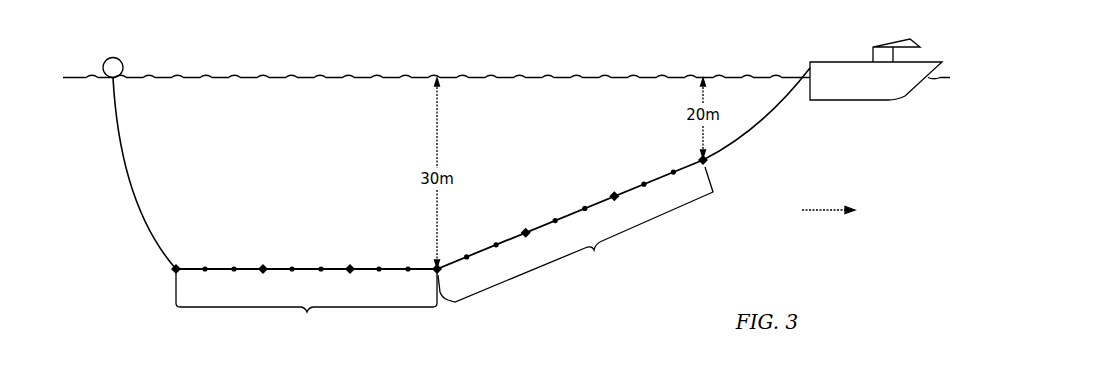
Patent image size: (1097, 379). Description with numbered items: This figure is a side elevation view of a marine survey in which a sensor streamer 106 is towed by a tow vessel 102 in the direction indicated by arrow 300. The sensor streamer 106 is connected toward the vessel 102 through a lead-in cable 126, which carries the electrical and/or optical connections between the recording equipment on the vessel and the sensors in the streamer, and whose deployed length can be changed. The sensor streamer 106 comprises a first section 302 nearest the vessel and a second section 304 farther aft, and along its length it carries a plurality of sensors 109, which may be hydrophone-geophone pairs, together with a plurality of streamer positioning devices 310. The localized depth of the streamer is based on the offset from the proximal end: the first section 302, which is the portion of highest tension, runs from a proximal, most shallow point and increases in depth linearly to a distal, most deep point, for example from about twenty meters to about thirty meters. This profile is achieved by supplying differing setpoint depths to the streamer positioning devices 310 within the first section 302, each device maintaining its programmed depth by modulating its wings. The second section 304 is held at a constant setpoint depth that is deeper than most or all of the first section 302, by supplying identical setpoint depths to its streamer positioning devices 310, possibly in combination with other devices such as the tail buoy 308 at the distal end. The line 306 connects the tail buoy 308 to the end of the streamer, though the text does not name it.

The tow vessel 102 is at (837, 60).
The sensor streamer 106 is at (572, 212).
The sensors 109 is at (407, 266).
The lead-in cable 126 is at (757, 121).
The arrow 300 is at (829, 212).
The first section 302 is at (594, 250).
The second section 304 is at (307, 312).
The buoy cable 306 is at (120, 152).
The tail buoy 308 is at (121, 59).
The streamer positioning devices 310 is at (180, 265).